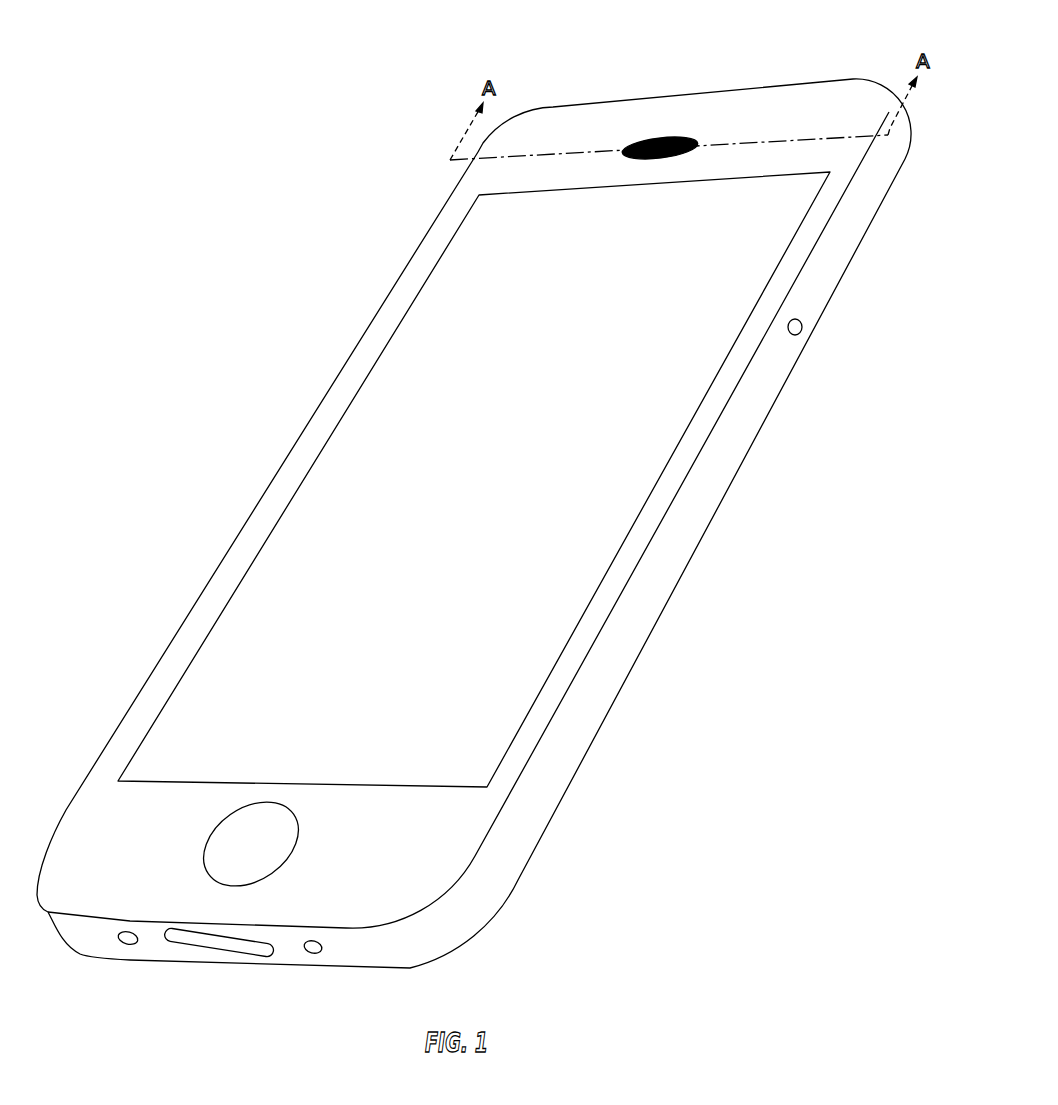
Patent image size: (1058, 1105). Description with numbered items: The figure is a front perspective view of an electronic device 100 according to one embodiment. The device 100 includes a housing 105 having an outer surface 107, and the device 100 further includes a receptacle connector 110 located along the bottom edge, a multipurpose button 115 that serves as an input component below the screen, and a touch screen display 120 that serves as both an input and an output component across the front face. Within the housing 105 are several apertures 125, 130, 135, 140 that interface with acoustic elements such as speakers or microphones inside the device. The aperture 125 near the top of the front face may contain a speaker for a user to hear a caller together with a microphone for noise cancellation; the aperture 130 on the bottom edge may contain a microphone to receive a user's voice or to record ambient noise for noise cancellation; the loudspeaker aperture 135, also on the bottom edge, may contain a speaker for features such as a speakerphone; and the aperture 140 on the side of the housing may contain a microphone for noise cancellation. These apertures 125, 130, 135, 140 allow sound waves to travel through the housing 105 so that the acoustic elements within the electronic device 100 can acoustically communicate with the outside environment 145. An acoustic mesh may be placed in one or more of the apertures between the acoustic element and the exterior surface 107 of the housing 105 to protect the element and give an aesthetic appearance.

The electronic device 100 is at (367, 190).
The housing 105 is at (440, 860).
The outer surface 107 is at (780, 110).
The receptacle connector 110 is at (222, 943).
The multipurpose button 115 is at (250, 843).
The touch screen display 120 is at (570, 447).
The aperture 125 is at (663, 140).
The aperture 130 is at (310, 949).
The loudspeaker aperture 135 is at (128, 942).
The aperture 140 is at (803, 331).
The outside environment 145 is at (183, 389).